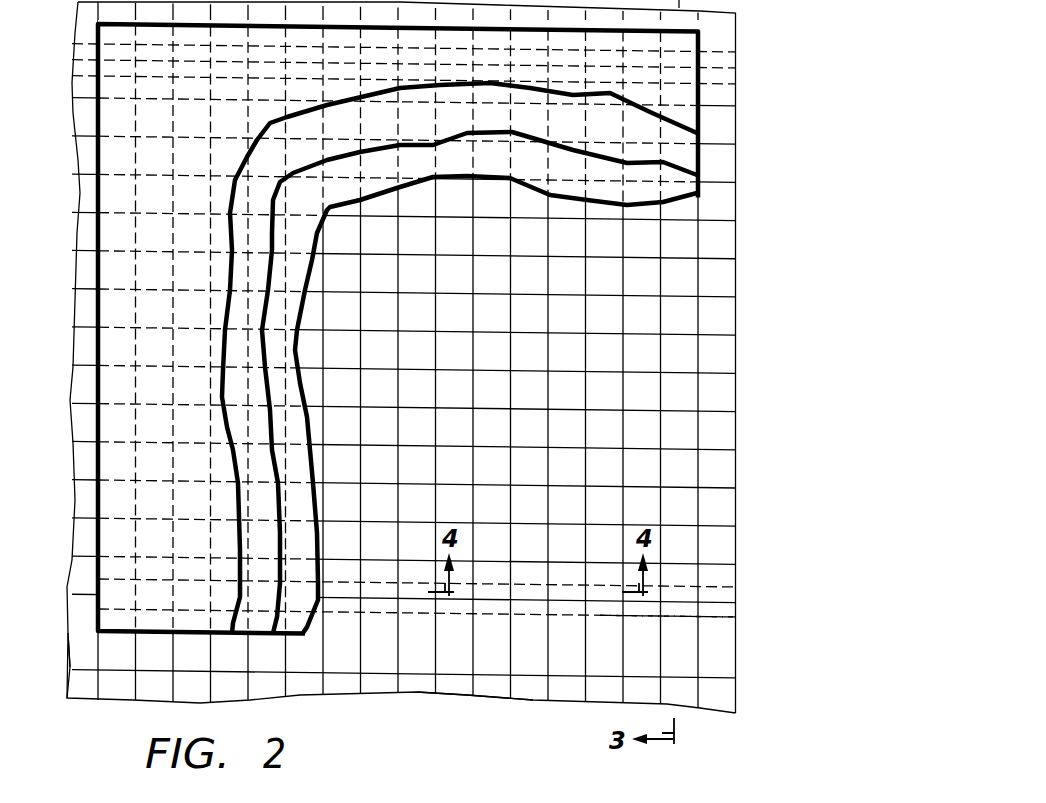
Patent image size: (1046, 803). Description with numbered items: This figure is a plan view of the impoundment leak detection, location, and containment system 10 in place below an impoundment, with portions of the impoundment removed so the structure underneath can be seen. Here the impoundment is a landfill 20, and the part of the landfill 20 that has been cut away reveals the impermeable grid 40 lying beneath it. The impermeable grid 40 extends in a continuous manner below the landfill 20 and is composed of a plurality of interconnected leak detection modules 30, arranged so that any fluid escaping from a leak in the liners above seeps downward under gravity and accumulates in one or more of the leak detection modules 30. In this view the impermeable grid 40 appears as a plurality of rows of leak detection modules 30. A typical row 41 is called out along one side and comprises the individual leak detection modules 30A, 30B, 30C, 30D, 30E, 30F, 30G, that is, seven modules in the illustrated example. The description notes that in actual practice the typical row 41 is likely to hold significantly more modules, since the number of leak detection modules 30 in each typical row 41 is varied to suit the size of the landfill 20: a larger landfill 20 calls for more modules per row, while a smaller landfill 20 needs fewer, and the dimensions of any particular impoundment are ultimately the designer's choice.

The impoundment leak detection, location, and containment system 10 is at (488, 722).
The landfill 20 is at (150, 200).
The leak detection modules 30 is at (336, 653).
The leak detection module 30A is at (677, 584).
The leak detection module 30B is at (677, 546).
The leak detection module 30C is at (677, 508).
The leak detection module 30D is at (677, 470).
The leak detection module 30E is at (677, 433).
The leak detection module 30F is at (677, 395).
The leak detection module 30G is at (677, 357).
The impermeable grid 40 is at (67, 698).
The typical row 41 is at (683, 612).